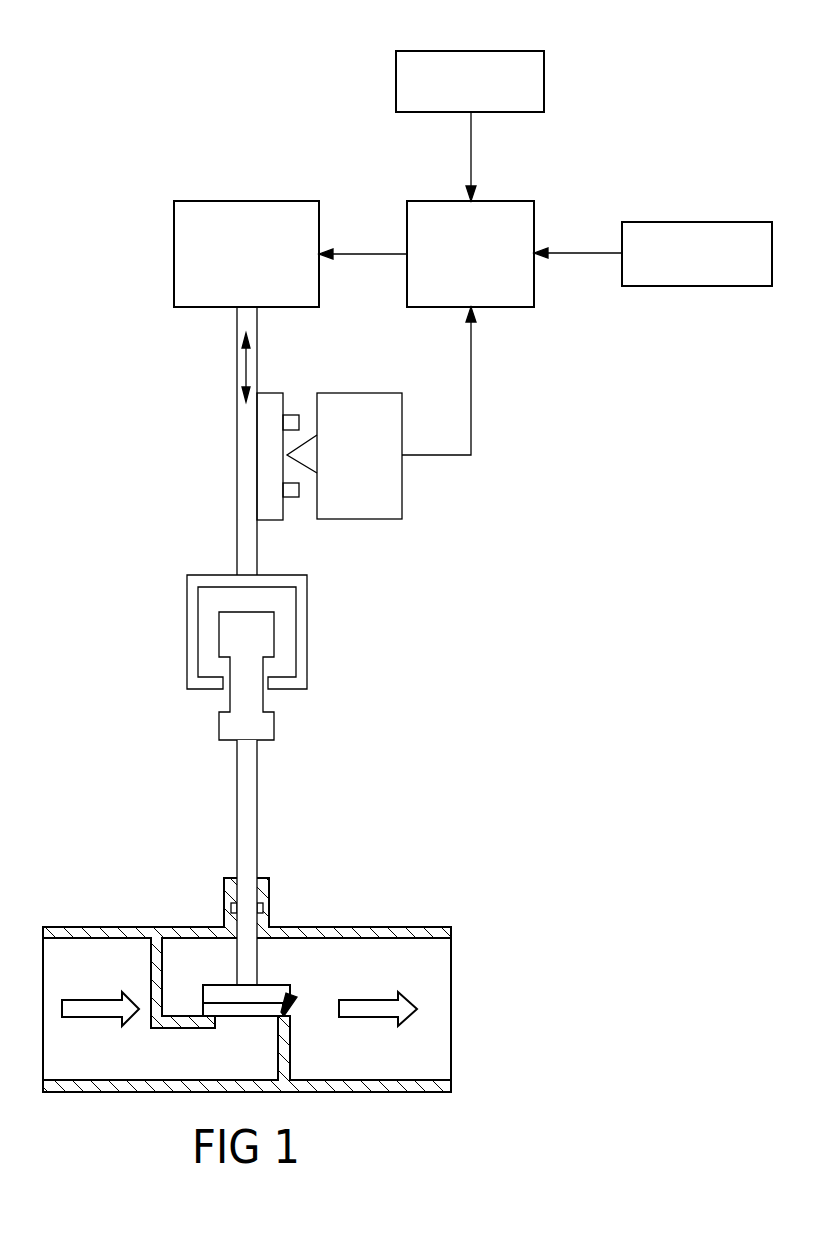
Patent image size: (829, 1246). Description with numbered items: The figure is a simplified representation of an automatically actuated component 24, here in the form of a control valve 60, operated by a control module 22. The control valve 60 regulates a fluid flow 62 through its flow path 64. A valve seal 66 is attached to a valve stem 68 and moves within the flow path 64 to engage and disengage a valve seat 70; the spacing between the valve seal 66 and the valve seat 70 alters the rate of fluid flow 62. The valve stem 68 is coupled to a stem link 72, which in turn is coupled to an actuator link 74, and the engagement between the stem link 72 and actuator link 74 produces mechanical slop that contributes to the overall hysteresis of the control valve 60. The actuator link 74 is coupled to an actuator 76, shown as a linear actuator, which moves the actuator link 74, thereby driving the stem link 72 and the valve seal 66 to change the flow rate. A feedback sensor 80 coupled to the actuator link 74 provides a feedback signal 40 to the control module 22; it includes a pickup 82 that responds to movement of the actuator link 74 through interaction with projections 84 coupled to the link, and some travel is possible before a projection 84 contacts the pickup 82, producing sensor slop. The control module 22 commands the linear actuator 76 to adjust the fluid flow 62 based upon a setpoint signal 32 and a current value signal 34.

The control module 22 is at (454, 294).
The component 24 is at (293, 577).
The setpoint signal 32 is at (578, 253).
The current value signal 34 is at (471, 132).
The feedback signal 40 is at (471, 350).
The control valve 60 is at (140, 158).
The fluid flow 62 is at (77, 1013).
The flow path 64 is at (108, 953).
The valve seal 66 is at (268, 990).
The valve stem 68 is at (250, 790).
The valve seat 70 is at (292, 995).
The stem link 72 is at (230, 723).
The actuator link 74 is at (240, 555).
The actuator 76 is at (231, 293).
The feedback sensor 80 is at (357, 400).
The pickup 82 is at (283, 443).
The projections 84 is at (290, 414).